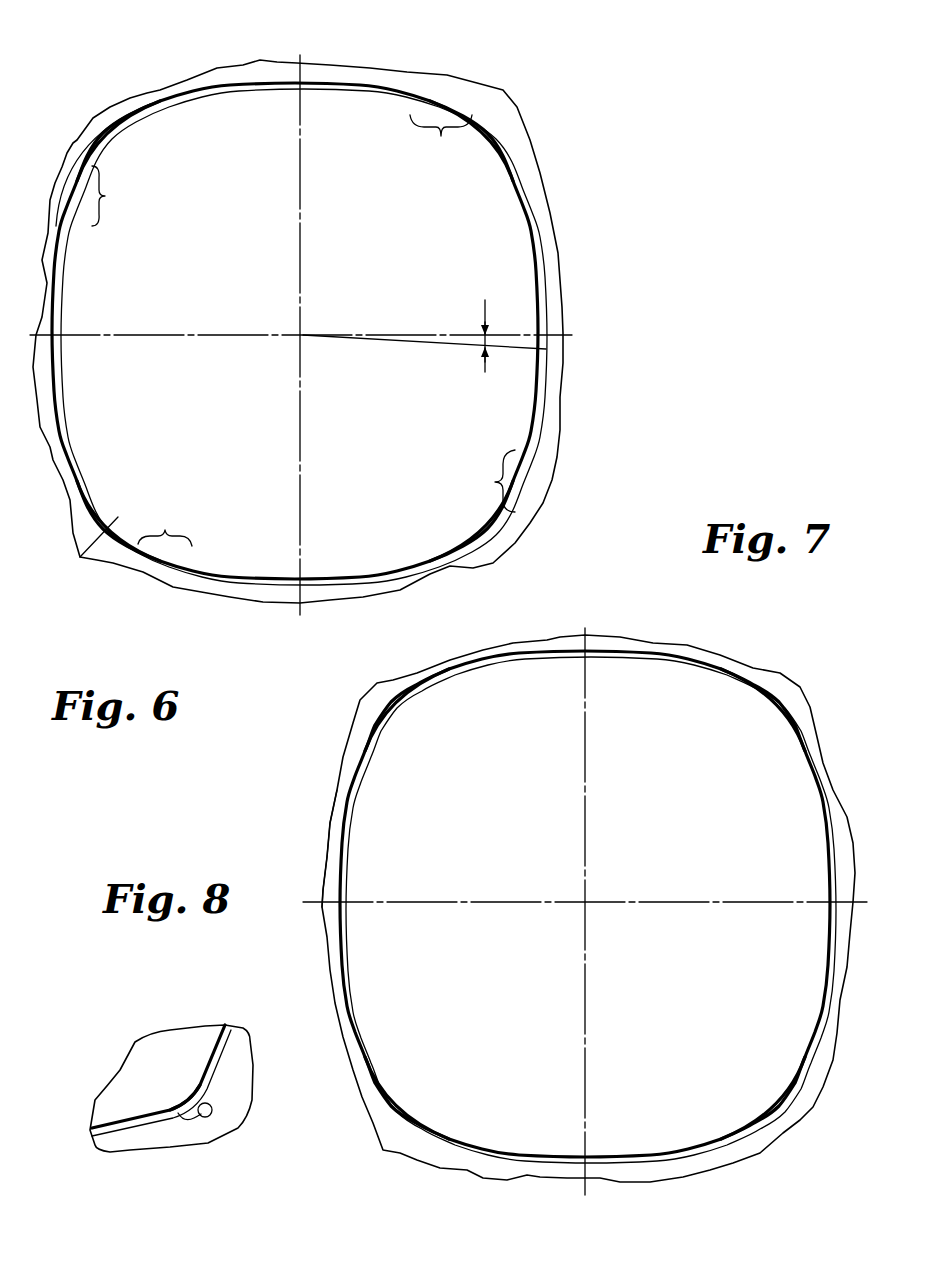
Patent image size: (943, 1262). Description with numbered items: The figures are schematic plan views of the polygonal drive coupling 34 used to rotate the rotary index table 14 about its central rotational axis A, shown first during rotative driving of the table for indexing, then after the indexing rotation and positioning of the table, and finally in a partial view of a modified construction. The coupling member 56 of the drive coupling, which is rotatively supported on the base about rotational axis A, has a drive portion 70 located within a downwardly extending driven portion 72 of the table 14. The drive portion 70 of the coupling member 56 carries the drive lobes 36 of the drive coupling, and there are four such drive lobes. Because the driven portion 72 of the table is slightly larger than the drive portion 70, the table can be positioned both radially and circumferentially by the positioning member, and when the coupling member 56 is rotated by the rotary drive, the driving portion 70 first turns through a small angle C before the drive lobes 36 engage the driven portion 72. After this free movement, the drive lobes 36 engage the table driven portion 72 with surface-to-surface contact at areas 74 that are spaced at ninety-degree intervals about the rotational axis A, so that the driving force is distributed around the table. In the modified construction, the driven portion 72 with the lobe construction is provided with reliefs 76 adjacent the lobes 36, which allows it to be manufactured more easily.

In FIG. 6, the rotary index table 14 is at (352, 62).
In FIG. 7, the rotary index table 14 is at (562, 636).
In FIG. 8, the rotary index table 14 is at (240, 1078).
In FIG. 6, the polygonal drive coupling 34 is at (513, 170).
In FIG. 7, the polygonal drive coupling 34 is at (728, 680).
In FIG. 8, the polygonal drive coupling 34 is at (236, 1040).
In FIG. 6, the drive lobes 36 is at (84, 188).
In FIG. 7, the drive lobes 36 is at (420, 713).
In FIG. 8, the drive lobes 36 is at (168, 1098).
In FIG. 6, the coupling member 56 is at (520, 272).
In FIG. 7, the coupling member 56 is at (797, 773).
In FIG. 8, the coupling member 56 is at (190, 1030).
In FIG. 6, the drive portion 70 is at (80, 557).
In FIG. 7, the drive portion 70 is at (366, 811).
In FIG. 6, the driven portion 72 is at (62, 275).
In FIG. 7, the driven portion 72 is at (375, 781).
In FIG. 6, the areas 74 is at (285, 325).
In FIG. 8, the reliefs 76 is at (212, 1113).
In FIG. 6, the rotational axis A is at (302, 337).
In FIG. 7, the rotational axis A is at (587, 904).
In FIG. 6, the small angle C is at (424, 349).